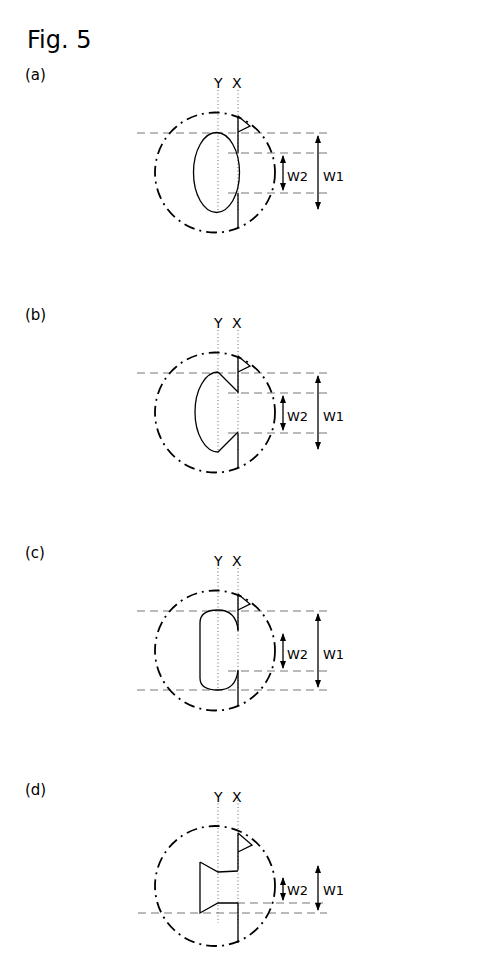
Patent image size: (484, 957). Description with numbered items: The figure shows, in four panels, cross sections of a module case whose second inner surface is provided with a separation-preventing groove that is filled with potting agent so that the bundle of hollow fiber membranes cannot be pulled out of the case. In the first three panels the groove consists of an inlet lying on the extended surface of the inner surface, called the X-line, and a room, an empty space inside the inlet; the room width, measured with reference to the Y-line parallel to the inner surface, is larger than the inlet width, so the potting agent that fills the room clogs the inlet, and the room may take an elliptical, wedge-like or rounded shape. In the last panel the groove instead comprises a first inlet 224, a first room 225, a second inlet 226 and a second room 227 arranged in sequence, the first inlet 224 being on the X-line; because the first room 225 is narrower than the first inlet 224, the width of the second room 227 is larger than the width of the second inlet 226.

The first inlet 224 is at (245, 885).
The first room 225 is at (234, 887).
The second inlet 226 is at (224, 887).
The second room 227 is at (209, 887).